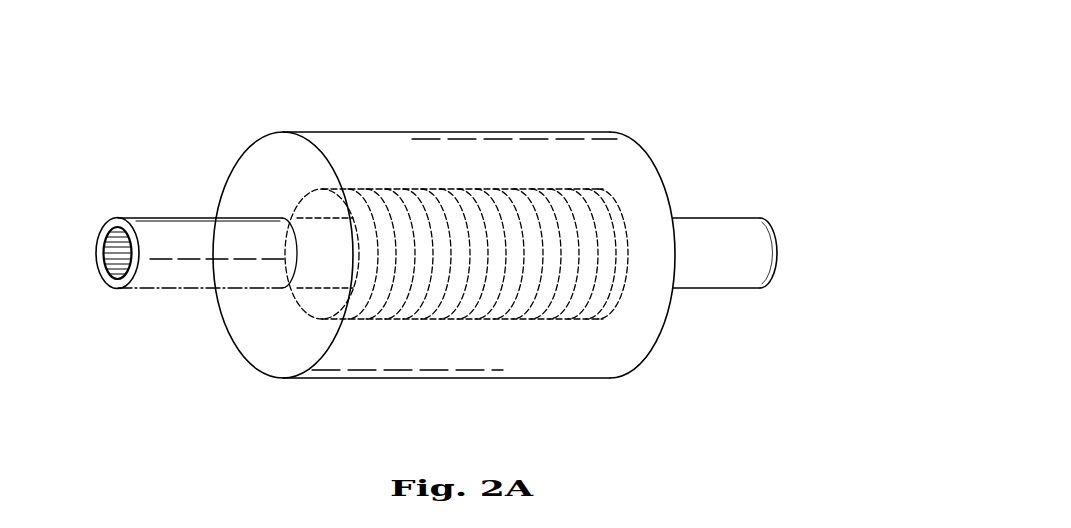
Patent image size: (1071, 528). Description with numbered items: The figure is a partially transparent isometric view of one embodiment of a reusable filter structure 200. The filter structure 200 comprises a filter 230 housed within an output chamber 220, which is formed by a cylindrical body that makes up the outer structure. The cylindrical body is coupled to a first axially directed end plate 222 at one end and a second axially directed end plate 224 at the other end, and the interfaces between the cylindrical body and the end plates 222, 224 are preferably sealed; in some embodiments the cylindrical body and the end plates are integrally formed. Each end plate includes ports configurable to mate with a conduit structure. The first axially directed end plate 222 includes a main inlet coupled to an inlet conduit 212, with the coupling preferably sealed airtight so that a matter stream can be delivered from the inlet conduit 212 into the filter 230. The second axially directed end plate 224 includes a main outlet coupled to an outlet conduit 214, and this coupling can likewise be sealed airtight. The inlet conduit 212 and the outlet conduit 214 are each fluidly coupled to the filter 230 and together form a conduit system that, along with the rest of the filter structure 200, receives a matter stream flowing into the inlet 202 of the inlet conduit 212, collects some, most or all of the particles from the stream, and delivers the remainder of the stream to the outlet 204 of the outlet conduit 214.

The filter structure 200 is at (188, 71).
The inlet 202 is at (102, 251).
The outlet 204 is at (677, 253).
The inlet conduit 212 is at (188, 228).
The outlet conduit 214 is at (725, 226).
The output chamber 220 is at (471, 131).
The first axially directed end plate 222 is at (247, 328).
The second axially directed end plate 224 is at (660, 332).
The filter 230 is at (475, 319).